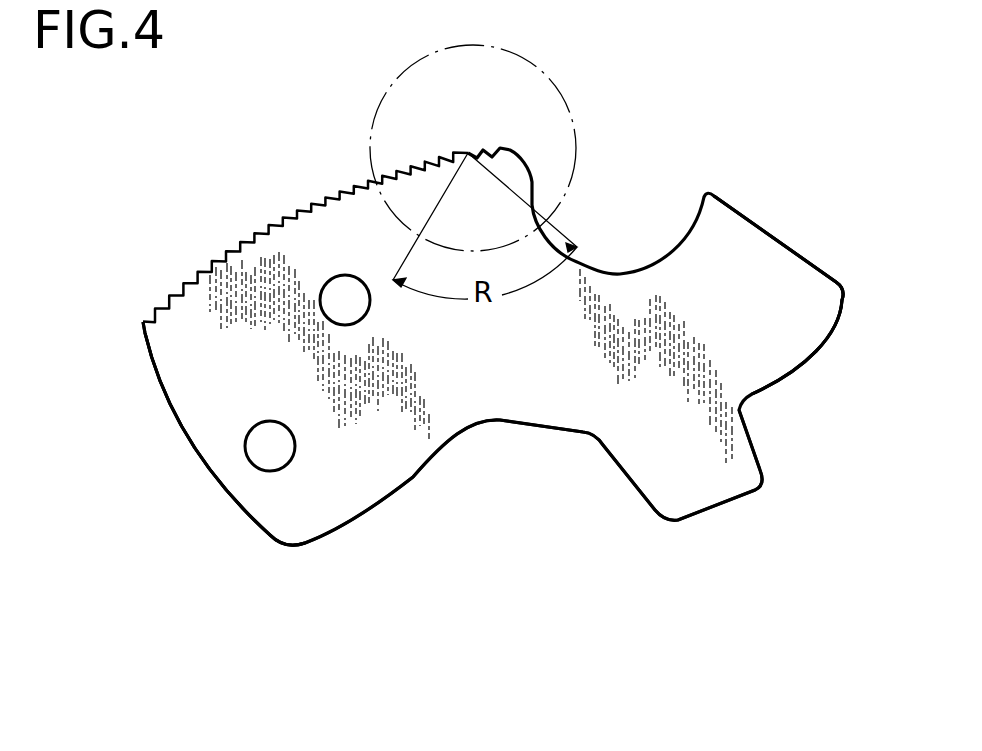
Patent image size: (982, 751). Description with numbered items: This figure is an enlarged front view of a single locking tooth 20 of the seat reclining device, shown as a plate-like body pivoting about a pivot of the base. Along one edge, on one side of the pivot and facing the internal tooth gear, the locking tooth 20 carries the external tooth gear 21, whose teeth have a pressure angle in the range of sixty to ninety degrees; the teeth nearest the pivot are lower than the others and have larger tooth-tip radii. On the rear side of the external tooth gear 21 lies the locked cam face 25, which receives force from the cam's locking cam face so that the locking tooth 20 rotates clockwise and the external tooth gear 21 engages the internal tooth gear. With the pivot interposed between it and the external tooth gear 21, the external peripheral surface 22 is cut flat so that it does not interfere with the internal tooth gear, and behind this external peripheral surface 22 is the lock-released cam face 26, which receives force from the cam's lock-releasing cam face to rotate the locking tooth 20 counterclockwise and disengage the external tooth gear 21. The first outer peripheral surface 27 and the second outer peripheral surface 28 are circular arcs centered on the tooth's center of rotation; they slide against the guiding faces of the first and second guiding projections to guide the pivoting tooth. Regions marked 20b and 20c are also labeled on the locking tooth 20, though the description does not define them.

The locking tooth 20 is at (702, 308).
The external tooth gear 21 is at (270, 218).
The external peripheral surface 22 is at (793, 251).
The blade rear portion 20b is at (180, 407).
The blade front portion 20c is at (772, 248).
The locked cam face 25 is at (417, 477).
The lock-released cam face 26 is at (643, 498).
The first outer peripheral surface 27 is at (810, 343).
The second outer peripheral surface 28 is at (187, 438).